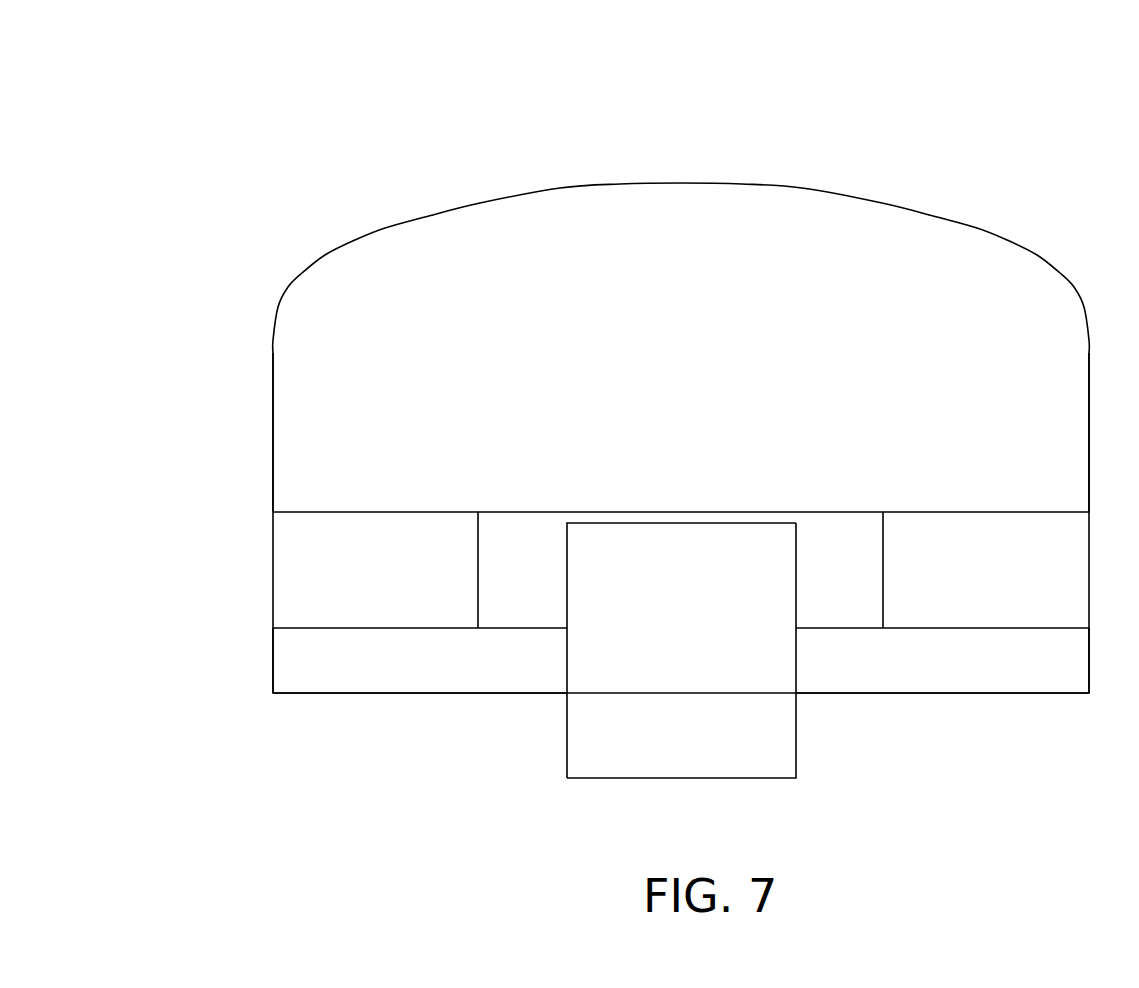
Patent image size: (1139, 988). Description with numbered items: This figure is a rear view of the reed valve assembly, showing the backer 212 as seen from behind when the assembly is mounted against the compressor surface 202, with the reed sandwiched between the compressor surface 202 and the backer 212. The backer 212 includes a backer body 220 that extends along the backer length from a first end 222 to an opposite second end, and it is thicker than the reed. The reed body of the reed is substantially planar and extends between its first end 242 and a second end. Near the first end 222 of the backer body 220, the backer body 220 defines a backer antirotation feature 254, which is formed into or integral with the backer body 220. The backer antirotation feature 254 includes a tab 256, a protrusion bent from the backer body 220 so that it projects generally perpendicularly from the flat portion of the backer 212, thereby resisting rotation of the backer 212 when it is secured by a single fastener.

The compressor surface 202 is at (812, 97).
The backer 212 is at (871, 293).
The backer body 220 is at (627, 305).
The first end 222 is at (296, 575).
The first end 242 is at (321, 665).
The backer antirotation feature 254 is at (604, 755).
The tab 256 is at (718, 697).